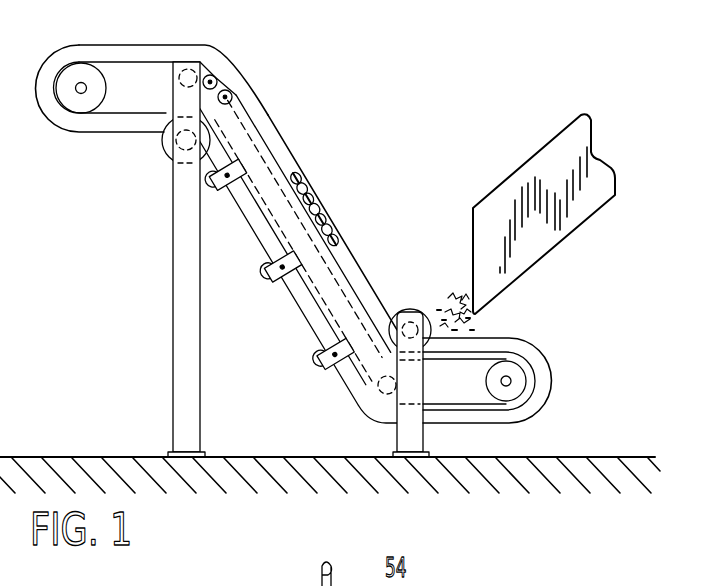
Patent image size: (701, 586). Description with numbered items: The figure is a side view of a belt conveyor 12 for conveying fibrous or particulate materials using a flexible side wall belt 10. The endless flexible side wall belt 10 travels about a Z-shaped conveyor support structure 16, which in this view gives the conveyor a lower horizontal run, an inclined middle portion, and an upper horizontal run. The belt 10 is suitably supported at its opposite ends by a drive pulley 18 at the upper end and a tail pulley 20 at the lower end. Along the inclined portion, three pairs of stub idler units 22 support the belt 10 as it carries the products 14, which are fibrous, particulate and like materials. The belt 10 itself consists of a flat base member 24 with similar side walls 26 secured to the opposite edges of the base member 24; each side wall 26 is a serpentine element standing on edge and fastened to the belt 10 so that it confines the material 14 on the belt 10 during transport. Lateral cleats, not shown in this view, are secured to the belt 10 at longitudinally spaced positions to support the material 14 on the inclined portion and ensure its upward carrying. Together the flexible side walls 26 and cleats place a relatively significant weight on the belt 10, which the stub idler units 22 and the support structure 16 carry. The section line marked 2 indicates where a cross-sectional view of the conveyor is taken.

The section line 2- 2 is at (367, 251).
The flexible side wall belt 10 is at (135, 62).
The belt conveyor 12 is at (328, 139).
The products 14 is at (322, 198).
The Z-shaped conveyor support structure 16 is at (343, 309).
The drive pulley 18 is at (84, 71).
The tail pulley 20 is at (519, 382).
The stub idler units 22 is at (313, 358).
The flat base member 24 is at (255, 116).
The side walls 26 is at (112, 127).